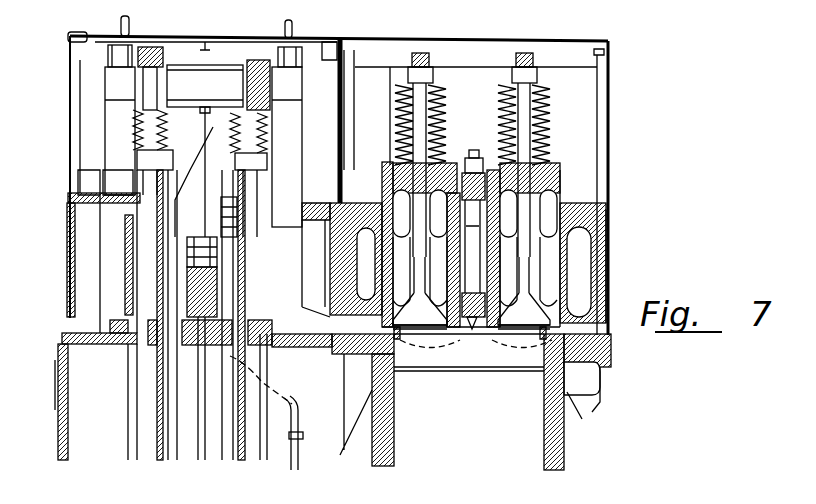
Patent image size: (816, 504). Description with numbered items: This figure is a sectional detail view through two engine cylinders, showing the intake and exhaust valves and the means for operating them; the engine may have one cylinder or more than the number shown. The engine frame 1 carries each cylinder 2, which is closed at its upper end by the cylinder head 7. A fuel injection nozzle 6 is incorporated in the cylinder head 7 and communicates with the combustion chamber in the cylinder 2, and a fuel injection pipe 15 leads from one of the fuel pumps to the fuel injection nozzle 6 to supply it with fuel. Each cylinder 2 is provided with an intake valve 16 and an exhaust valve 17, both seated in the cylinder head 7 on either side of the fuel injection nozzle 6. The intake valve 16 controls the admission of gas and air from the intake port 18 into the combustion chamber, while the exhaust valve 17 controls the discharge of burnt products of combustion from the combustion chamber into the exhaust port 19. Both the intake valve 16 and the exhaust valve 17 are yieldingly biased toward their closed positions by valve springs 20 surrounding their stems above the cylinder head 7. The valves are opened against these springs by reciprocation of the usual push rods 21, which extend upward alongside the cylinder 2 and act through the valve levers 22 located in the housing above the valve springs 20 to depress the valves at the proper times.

The engine frame 1 is at (54, 347).
The cylinder 2 is at (395, 420).
The fuel injection nozzle 6 is at (481, 158).
The cylinder head 7 is at (600, 222).
The fuel injection pipe 15 is at (298, 410).
The intake valve 16 is at (440, 350).
The exhaust valve 17 is at (528, 355).
The intake port 18 is at (429, 346).
The exhaust port 19 is at (513, 347).
The valve spring 20 is at (160, 140).
The push rod 21 is at (150, 388).
The valve lever 22 is at (163, 36).